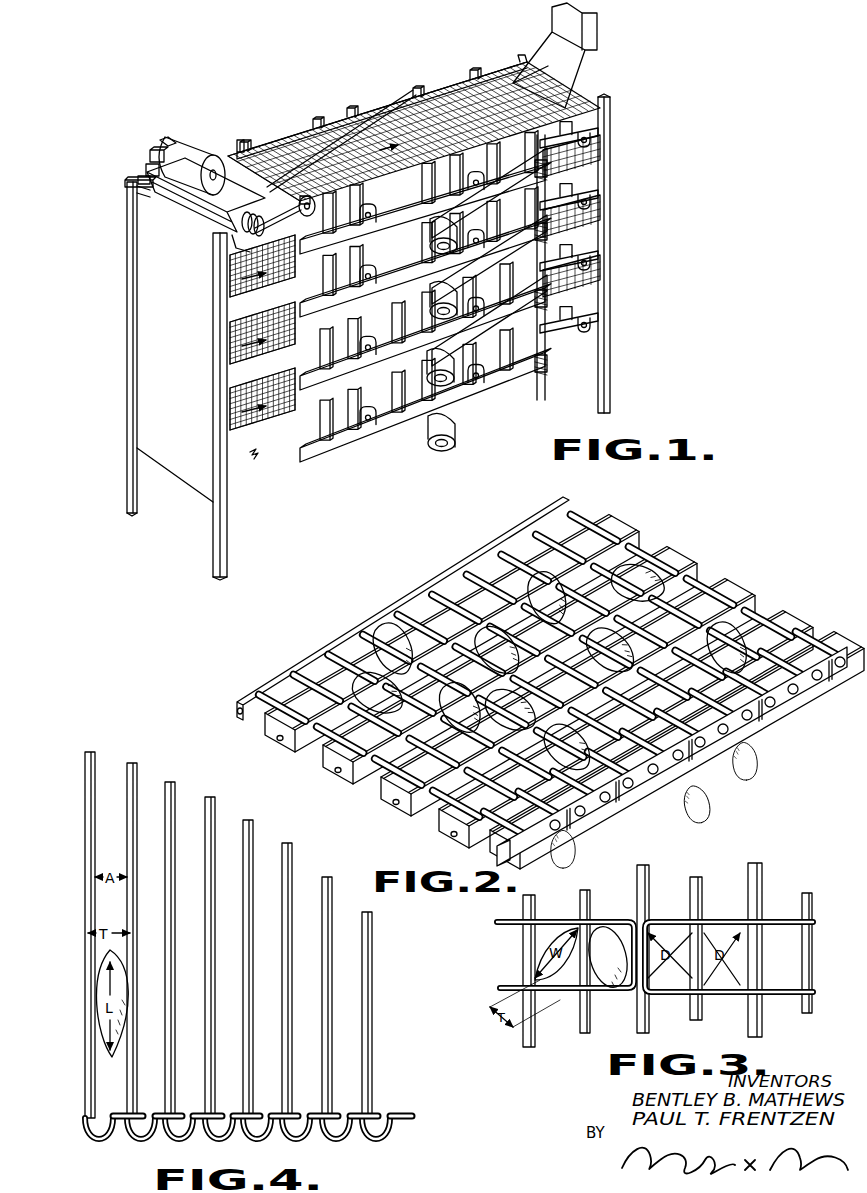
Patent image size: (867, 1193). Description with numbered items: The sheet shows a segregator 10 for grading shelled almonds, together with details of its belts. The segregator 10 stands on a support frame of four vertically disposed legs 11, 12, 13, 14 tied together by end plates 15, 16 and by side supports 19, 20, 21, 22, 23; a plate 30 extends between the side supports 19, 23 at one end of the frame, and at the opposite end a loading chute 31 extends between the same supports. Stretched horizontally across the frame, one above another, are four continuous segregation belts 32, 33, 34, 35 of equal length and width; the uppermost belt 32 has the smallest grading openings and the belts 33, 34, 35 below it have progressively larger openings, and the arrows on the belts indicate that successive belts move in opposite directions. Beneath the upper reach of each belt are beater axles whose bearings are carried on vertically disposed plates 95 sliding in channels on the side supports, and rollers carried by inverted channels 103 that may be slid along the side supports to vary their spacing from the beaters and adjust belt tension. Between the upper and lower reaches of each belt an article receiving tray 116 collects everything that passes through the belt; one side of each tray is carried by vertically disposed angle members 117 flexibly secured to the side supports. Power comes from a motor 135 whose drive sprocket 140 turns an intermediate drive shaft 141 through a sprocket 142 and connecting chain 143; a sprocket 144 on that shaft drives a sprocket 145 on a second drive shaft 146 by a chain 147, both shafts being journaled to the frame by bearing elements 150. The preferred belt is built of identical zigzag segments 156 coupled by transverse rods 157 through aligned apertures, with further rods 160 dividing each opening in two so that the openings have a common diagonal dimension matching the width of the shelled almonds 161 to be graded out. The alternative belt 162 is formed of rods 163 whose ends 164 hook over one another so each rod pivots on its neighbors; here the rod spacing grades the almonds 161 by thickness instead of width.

In FIG. 1, the segregator 10 is at (612, 190).
In FIG. 1, the leg 11 is at (521, 58).
In FIG. 1, the leg 12 is at (611, 110).
In FIG. 1, the leg 13 is at (213, 530).
In FIG. 1, the leg 14 is at (127, 395).
In FIG. 1, the end plate 15 is at (582, 222).
In FIG. 1, the end plate 16 is at (135, 238).
In FIG. 1, the side support 19 is at (585, 118).
In FIG. 1, the side support 20 is at (590, 184).
In FIG. 1, the side support 21 is at (590, 247).
In FIG. 1, the side support 22 is at (590, 310).
In FIG. 1, the side support 23 is at (466, 82).
In FIG. 1, the plate 30 is at (125, 182).
In FIG. 1, the loading chute 31 is at (598, 49).
In FIG. 1, the segregation belt 32 is at (312, 142).
In FIG. 1, the segregation belt 33 is at (240, 276).
In FIG. 1, the segregation belt 34 is at (240, 343).
In FIG. 1, the segregation belt 35 is at (240, 410).
In FIG. 1, the plate 95 is at (392, 220).
In FIG. 1, the inverted channel 103 is at (334, 240).
In FIG. 1, the article receiving tray 116 is at (506, 176).
In FIG. 1, the angle member 117 is at (547, 352).
In FIG. 1, the motor 135 is at (222, 124).
In FIG. 1, the drive sprocket 140 is at (175, 140).
In FIG. 1, the intermediate drive shaft 141 is at (200, 207).
In FIG. 1, the sprocket 142 is at (150, 165).
In FIG. 1, the connecting chain 143 is at (157, 148).
In FIG. 1, the sprocket 144 is at (230, 246).
In FIG. 1, the sprocket 145 is at (313, 200).
In FIG. 1, the drive shaft 146 is at (268, 186).
In FIG. 1, the chain 147 is at (286, 218).
In FIG. 1, the bearing element 150 is at (244, 140).
In FIG. 2, the segment 156 is at (497, 850).
In FIG. 3, the segment 156 is at (602, 919).
In FIG. 2, the rod 157 is at (560, 830).
In FIG. 3, the rod 157 is at (523, 1040).
In FIG. 2, the rod 160 is at (629, 789).
In FIG. 3, the rod 160 is at (584, 1033).
In FIG. 2, the shelled almond 161 is at (742, 762).
In FIG. 3, the shelled almond 161 is at (563, 934).
In FIG. 4, the shelled almond 161 is at (100, 990).
In FIG. 4, the segregation belt 162 is at (84, 1128).
In FIG. 4, the rod 163 is at (85, 812).
In FIG. 4, the hooked end 164 is at (107, 1132).